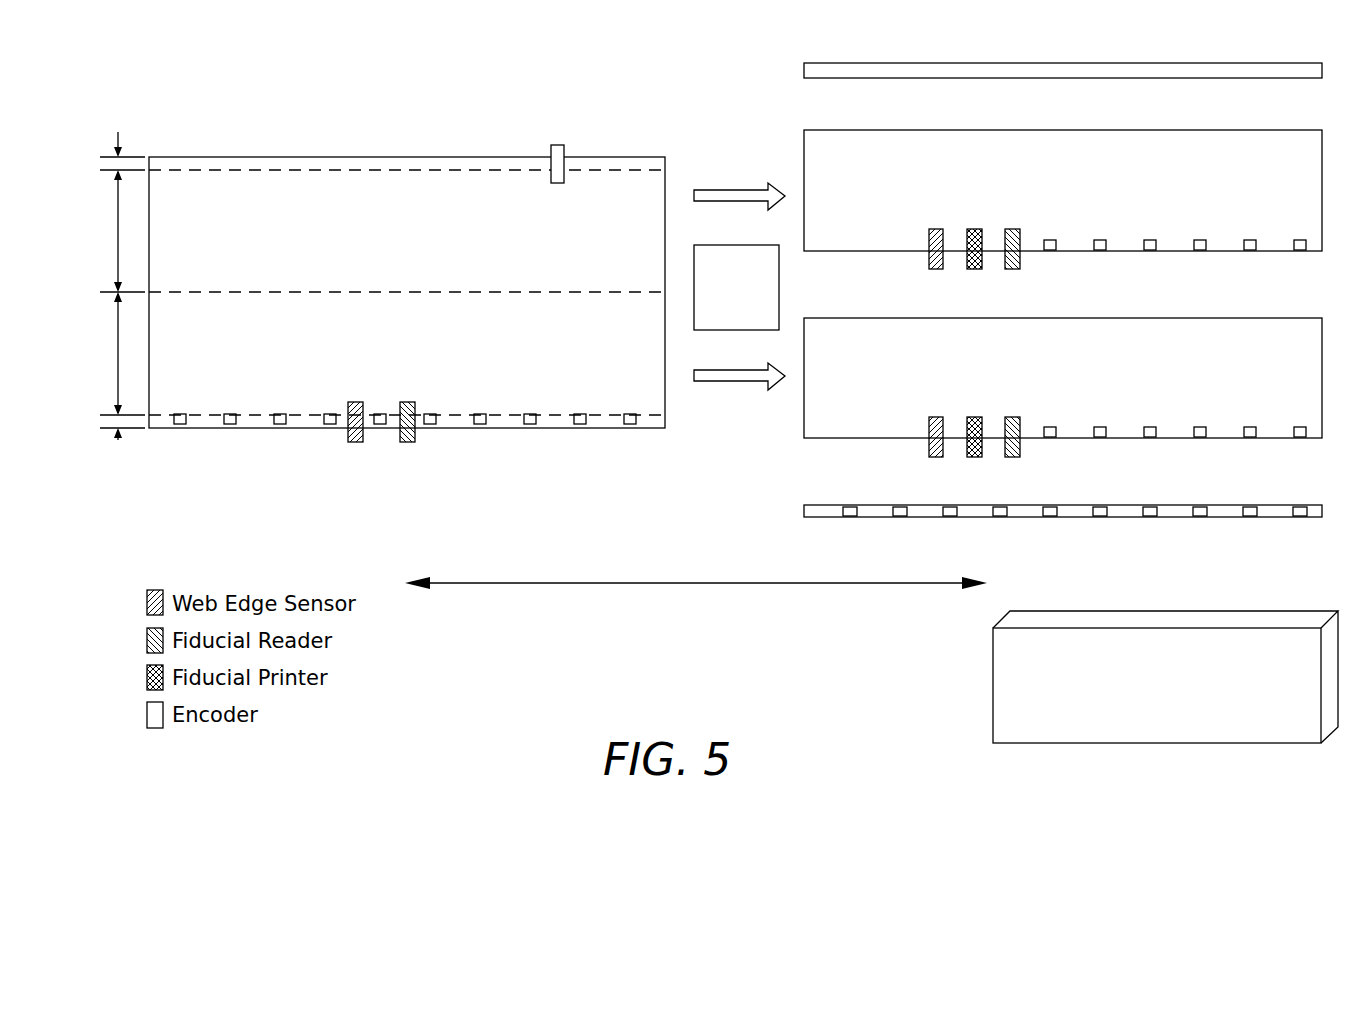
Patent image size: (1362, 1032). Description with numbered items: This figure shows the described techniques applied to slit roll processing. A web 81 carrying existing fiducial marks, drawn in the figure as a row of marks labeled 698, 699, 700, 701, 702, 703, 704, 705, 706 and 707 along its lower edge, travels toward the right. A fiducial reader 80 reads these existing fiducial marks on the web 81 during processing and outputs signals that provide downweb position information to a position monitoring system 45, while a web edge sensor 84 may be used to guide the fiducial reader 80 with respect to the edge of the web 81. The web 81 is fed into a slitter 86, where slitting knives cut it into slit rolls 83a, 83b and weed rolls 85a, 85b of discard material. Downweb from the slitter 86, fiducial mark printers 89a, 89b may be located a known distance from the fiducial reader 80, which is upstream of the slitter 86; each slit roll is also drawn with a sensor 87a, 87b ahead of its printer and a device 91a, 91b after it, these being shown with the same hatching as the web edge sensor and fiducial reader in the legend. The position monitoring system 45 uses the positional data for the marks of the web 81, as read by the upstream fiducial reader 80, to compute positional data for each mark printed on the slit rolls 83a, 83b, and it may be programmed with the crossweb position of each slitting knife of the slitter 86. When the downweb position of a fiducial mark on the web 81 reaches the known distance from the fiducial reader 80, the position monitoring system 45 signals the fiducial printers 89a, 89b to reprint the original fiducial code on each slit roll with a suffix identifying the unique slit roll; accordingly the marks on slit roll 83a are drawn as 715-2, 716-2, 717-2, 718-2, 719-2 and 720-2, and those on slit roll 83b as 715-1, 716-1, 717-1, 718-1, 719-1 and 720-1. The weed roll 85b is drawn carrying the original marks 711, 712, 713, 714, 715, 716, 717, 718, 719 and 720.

The web 81 is at (625, 157).
The web edge sensor 84 is at (355, 442).
The fiducial reader 80 is at (407, 442).
The slitter 86 is at (750, 299).
The weed roll 85a is at (866, 63).
The slit roll 83a is at (866, 130).
The web edge sensor 87a is at (934, 229).
The fiducial mark printer 89a is at (974, 229).
The fiducial reader 91a is at (1013, 229).
The slit roll 83b is at (862, 438).
The web edge sensor 87b is at (934, 417).
The fiducial mark printer 89b is at (974, 417).
The fiducial reader 91b is at (1013, 417).
The weed roll 85b is at (815, 518).
The position monitoring system 45 is at (993, 683).
The fiducial 698 is at (179, 441).
The fiducial 699 is at (229, 441).
The fiducial 700 is at (279, 441).
The fiducial 701 is at (329, 441).
The fiducial 702 is at (379, 441).
The fiducial 703 is at (429, 441).
The fiducial 704 is at (479, 441).
The fiducial 705 is at (529, 441).
The fiducial 706 is at (579, 441).
The fiducial 707 is at (629, 441).
The fiducial 711 is at (849, 531).
The fiducial 712 is at (899, 531).
The fiducial 713 is at (949, 531).
The fiducial 714 is at (999, 531).
The fiducial 715 is at (1049, 531).
The fiducial 716 is at (1099, 531).
The fiducial 717 is at (1149, 531).
The fiducial 718 is at (1199, 531).
The fiducial 719 is at (1249, 531).
The fiducial 720 is at (1299, 531).
The fiducial 715-1 is at (1049, 459).
The fiducial 716-1 is at (1099, 459).
The fiducial 717-1 is at (1149, 459).
The fiducial 718-1 is at (1199, 459).
The fiducial 719-1 is at (1249, 459).
The fiducial 720-1 is at (1299, 459).
The fiducial 715-2 is at (1049, 272).
The fiducial 716-2 is at (1099, 272).
The fiducial 717-2 is at (1149, 272).
The fiducial 718-2 is at (1199, 272).
The fiducial 719-2 is at (1249, 272).
The fiducial 720-2 is at (1299, 272).